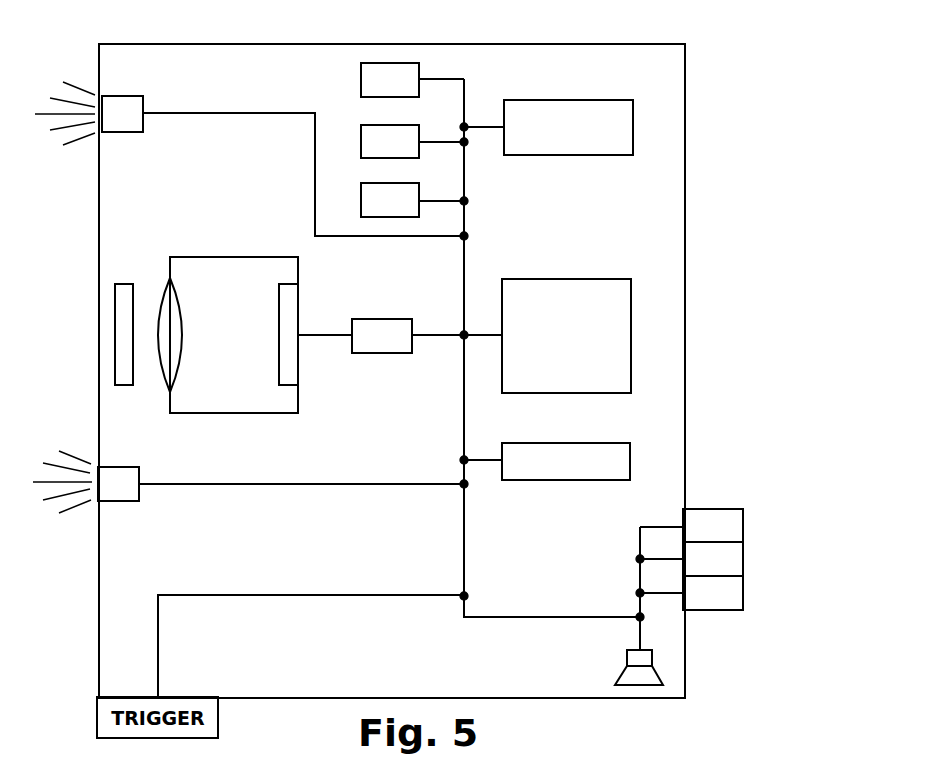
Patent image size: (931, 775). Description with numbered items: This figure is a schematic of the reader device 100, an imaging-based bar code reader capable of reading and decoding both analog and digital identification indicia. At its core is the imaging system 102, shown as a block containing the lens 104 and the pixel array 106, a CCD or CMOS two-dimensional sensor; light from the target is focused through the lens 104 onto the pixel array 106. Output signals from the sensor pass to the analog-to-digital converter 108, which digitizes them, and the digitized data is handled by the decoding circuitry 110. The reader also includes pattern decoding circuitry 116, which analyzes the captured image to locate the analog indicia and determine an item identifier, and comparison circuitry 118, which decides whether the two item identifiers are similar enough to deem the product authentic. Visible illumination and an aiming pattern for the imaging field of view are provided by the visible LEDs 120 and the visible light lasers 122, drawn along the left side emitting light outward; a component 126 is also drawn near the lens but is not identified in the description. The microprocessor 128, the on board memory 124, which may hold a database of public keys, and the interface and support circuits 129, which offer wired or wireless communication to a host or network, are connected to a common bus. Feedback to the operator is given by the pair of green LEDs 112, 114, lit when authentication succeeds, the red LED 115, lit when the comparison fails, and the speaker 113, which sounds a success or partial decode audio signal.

The reader device 100 is at (699, 148).
The imaging system 102 is at (224, 251).
The lens 104 is at (181, 338).
The pixel array 106 is at (279, 329).
The analog-to-digital converter 108 is at (367, 347).
The decoding circuitry 110 is at (375, 91).
The green LED 112 is at (745, 530).
The speaker 113 is at (640, 677).
The green LED 114 is at (745, 562).
The red LED 115 is at (745, 597).
The pattern decoding circuitry 116 is at (375, 153).
The comparison circuitry 118 is at (375, 211).
The visible LEDs 120 is at (129, 96).
The visible light lasers 122 is at (128, 467).
The on board memory 124 is at (635, 112).
The window 126 is at (123, 284).
The microprocessor 128 is at (632, 358).
The interface and support circuits 129 is at (633, 457).